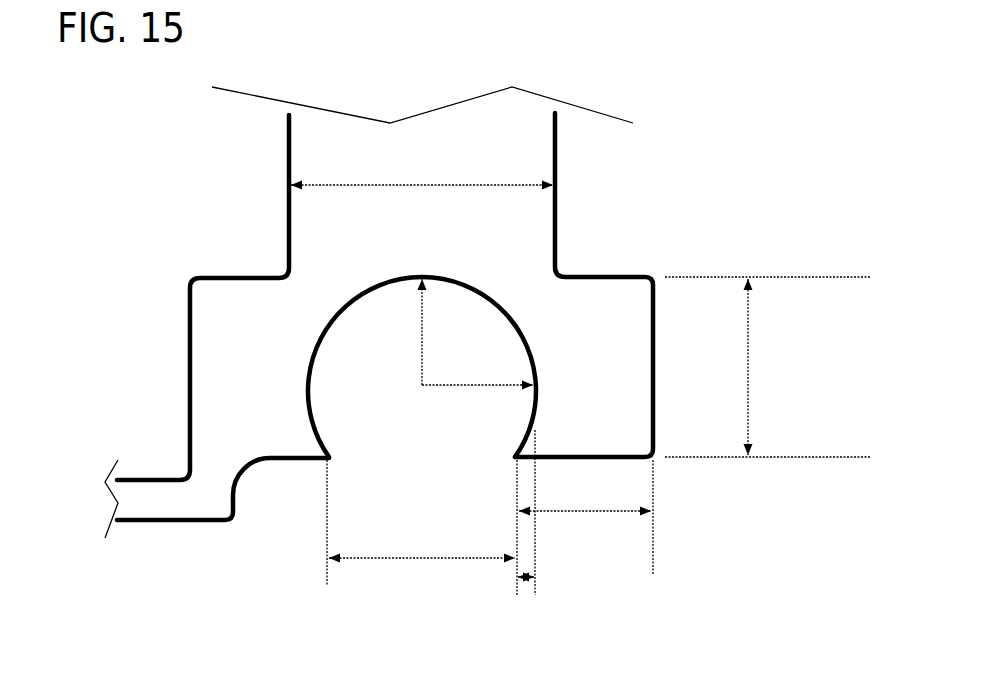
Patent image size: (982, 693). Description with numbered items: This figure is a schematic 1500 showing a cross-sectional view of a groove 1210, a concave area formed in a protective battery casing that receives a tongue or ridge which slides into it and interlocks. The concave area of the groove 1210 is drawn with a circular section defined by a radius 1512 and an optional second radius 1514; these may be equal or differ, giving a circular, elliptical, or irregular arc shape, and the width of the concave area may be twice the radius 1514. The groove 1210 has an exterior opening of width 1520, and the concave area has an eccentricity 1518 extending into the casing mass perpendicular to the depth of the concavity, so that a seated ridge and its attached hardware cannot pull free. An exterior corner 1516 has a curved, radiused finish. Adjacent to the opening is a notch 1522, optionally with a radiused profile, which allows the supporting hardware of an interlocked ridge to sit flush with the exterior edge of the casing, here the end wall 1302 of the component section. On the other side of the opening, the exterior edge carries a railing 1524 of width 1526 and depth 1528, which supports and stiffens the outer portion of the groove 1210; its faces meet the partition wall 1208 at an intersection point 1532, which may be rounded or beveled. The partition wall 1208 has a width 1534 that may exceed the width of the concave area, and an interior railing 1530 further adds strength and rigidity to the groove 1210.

The schematic 1500 is at (572, 43).
The partition wall 1208 is at (287, 131).
The width 1534 is at (347, 186).
The interior railing 1530 is at (189, 283).
The intersection point 1532 is at (563, 267).
The railing 1524 is at (655, 276).
The depth 1528 is at (750, 343).
The radius 1512 is at (419, 328).
The second radius 1514 is at (468, 389).
The groove 1210 is at (348, 416).
The exterior corner 1516 is at (332, 460).
The notch 1522 is at (246, 480).
The end wall 1302 is at (147, 524).
The width 1520 is at (420, 561).
The eccentricity 1518 is at (527, 580).
The width 1526 is at (597, 514).